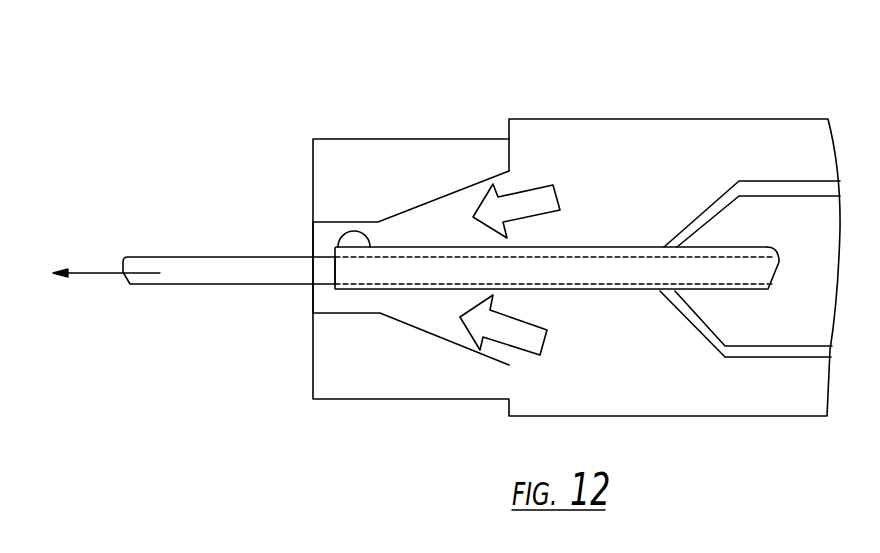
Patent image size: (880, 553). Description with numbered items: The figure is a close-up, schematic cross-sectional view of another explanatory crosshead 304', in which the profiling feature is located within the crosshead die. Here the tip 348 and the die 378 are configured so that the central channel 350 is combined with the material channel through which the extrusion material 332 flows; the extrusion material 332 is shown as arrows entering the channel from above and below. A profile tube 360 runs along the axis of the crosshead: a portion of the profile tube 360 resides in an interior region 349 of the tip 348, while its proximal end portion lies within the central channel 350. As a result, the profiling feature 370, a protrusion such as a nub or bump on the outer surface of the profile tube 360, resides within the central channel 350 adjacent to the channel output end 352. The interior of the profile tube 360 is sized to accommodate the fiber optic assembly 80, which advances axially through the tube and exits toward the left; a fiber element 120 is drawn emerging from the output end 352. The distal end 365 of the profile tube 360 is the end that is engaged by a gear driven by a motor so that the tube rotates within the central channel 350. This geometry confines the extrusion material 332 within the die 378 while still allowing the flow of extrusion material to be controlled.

The crosshead 304' is at (593, 216).
The die 378 is at (461, 134).
The output end 352 is at (313, 245).
The central channel 350 is at (440, 222).
The profile tube 360 is at (732, 247).
The fiber optic assembly 80 is at (742, 270).
The profiling feature 370 is at (350, 237).
The distal end 365 is at (335, 277).
The optical fiber 120 is at (222, 265).
The tip 348 is at (806, 180).
The interior region 349 is at (767, 337).
The extrusion material 332 is at (560, 197).